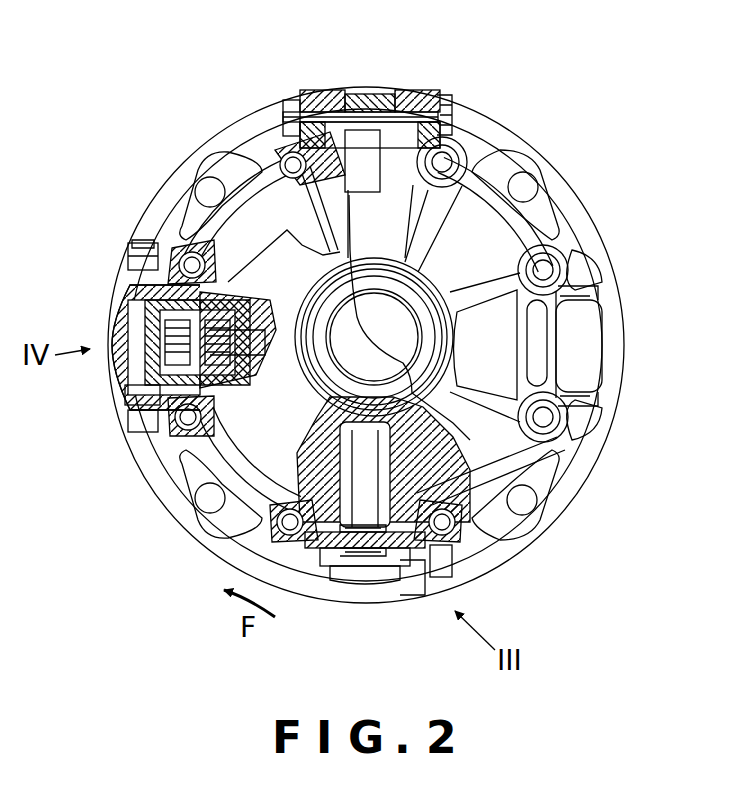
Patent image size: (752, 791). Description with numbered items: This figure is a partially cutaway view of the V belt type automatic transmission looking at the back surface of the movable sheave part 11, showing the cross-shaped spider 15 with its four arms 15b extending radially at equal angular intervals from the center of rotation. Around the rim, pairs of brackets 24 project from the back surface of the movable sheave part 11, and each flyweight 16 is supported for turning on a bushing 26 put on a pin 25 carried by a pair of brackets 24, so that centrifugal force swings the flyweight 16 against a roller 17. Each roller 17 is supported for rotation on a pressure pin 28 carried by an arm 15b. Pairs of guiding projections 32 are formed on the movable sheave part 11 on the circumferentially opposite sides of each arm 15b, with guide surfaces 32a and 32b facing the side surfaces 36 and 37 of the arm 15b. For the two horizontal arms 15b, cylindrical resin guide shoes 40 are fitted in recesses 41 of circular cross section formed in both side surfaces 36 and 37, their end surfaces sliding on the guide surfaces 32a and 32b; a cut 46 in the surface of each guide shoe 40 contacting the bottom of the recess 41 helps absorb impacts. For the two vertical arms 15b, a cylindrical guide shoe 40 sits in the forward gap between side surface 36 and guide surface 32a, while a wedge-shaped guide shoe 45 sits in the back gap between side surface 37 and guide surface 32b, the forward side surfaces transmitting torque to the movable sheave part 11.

The movable sheave part 11 is at (212, 142).
The spider 15 is at (265, 410).
The arm 15b is at (585, 352).
The flyweight 16 is at (378, 165).
The roller 17 is at (362, 582).
The bracket 24 is at (330, 95).
The pin 25 is at (312, 100).
The bushing 26 is at (370, 95).
The pressure pin 28 is at (332, 586).
The guiding projection 32 is at (143, 243).
The guide surface 32a is at (133, 230).
The guide surface 32b is at (150, 422).
The side surface 36 is at (118, 292).
The side surface 37 is at (122, 388).
The guide shoe 40 is at (118, 306).
The recess 41 is at (244, 368).
The wedge-shaped guide shoe 45 is at (384, 566).
The cut 46 is at (235, 292).